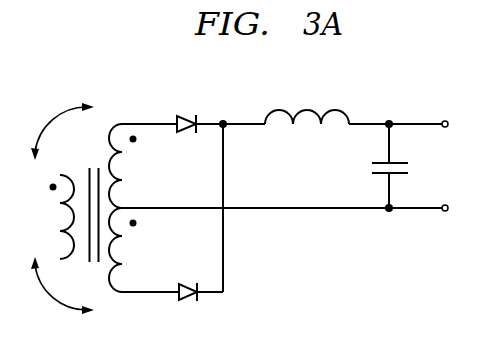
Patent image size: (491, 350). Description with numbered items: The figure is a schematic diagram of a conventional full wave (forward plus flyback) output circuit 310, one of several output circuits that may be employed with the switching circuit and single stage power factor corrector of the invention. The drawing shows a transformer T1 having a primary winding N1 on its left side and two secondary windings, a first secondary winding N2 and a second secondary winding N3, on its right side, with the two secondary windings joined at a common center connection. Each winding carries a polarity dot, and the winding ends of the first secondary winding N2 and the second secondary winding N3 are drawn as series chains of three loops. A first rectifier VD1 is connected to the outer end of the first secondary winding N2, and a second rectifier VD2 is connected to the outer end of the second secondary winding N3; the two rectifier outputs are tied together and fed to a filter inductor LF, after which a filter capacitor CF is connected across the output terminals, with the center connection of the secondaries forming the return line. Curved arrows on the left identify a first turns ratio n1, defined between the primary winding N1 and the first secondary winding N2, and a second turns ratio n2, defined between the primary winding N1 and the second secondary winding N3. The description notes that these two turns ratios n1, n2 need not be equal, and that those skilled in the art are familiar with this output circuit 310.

The full wave (forward+flyback) output circuit 310 is at (142, 90).
The transformer T1 is at (91, 202).
The primary winding N1 is at (52, 217).
The first secondary winding N2 is at (129, 166).
The second secondary winding N3 is at (132, 250).
The first rectifier diode VD1 is at (190, 111).
The second rectifier diode VD2 is at (189, 308).
The filter inductor LF is at (307, 104).
The filter capacitor CF is at (383, 166).
The first turns ratio n1 is at (60, 126).
The second turns ratio n2 is at (60, 292).